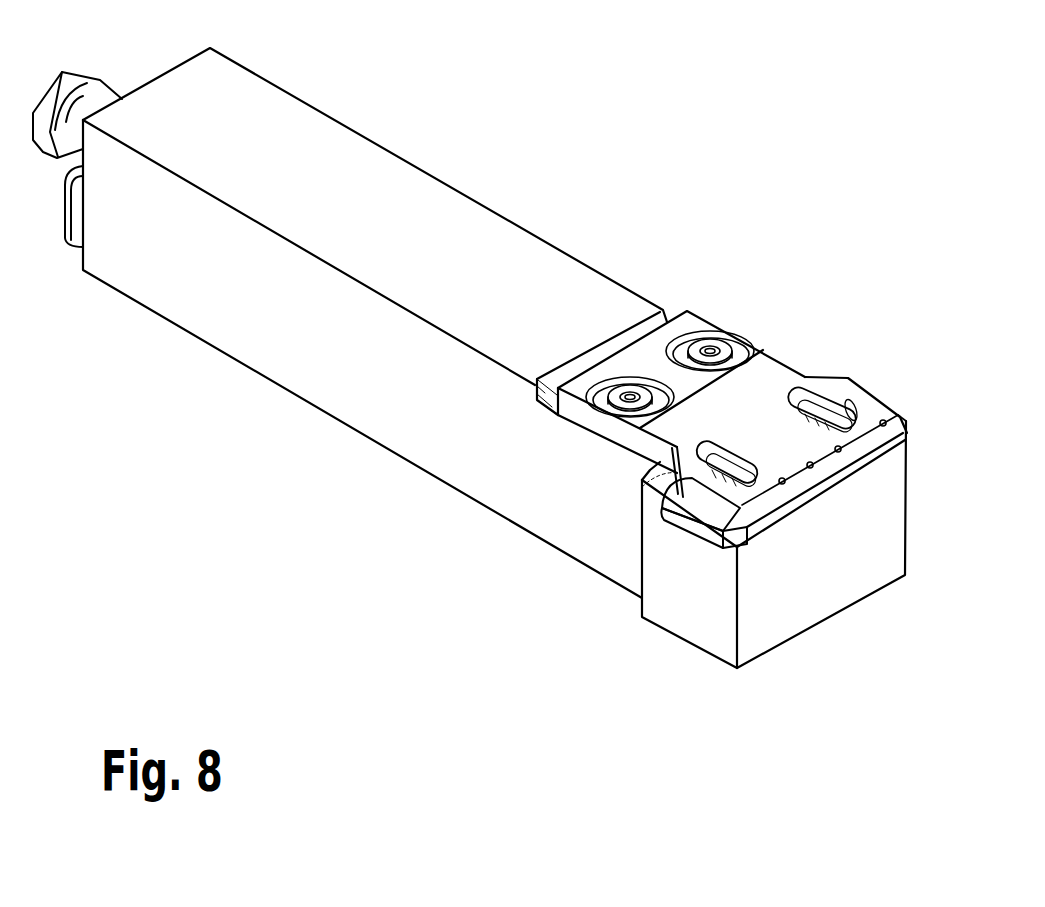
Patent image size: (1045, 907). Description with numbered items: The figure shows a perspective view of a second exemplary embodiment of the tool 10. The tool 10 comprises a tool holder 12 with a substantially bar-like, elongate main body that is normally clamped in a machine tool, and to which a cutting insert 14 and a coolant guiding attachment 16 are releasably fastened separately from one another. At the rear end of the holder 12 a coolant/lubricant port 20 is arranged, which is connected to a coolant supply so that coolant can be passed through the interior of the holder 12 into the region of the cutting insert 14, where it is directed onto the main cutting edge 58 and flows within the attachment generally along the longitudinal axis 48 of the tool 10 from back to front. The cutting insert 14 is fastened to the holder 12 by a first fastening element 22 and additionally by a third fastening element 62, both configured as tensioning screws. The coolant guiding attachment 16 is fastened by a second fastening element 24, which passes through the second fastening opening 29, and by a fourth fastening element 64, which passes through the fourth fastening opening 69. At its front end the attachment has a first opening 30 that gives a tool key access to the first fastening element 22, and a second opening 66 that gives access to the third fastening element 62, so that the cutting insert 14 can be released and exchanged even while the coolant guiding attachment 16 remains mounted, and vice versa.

The tool 10 is at (612, 97).
The tool holder 12 is at (303, 382).
The cutting insert 14 is at (847, 480).
The coolant guiding attachment 16 is at (775, 380).
The coolant/lubricant port 20 is at (97, 100).
The first fastening element 22 is at (675, 478).
The second fastening element 24 is at (628, 388).
The second fastening opening 29 is at (565, 372).
The first opening 30 is at (713, 450).
The longitudinal axis 48 is at (820, 560).
The main cutting edge 58 is at (867, 458).
The third fastening element 62 is at (848, 400).
The fourth fastening element 64 is at (730, 337).
The second opening 66 is at (813, 395).
The fourth fastening opening 69 is at (692, 337).